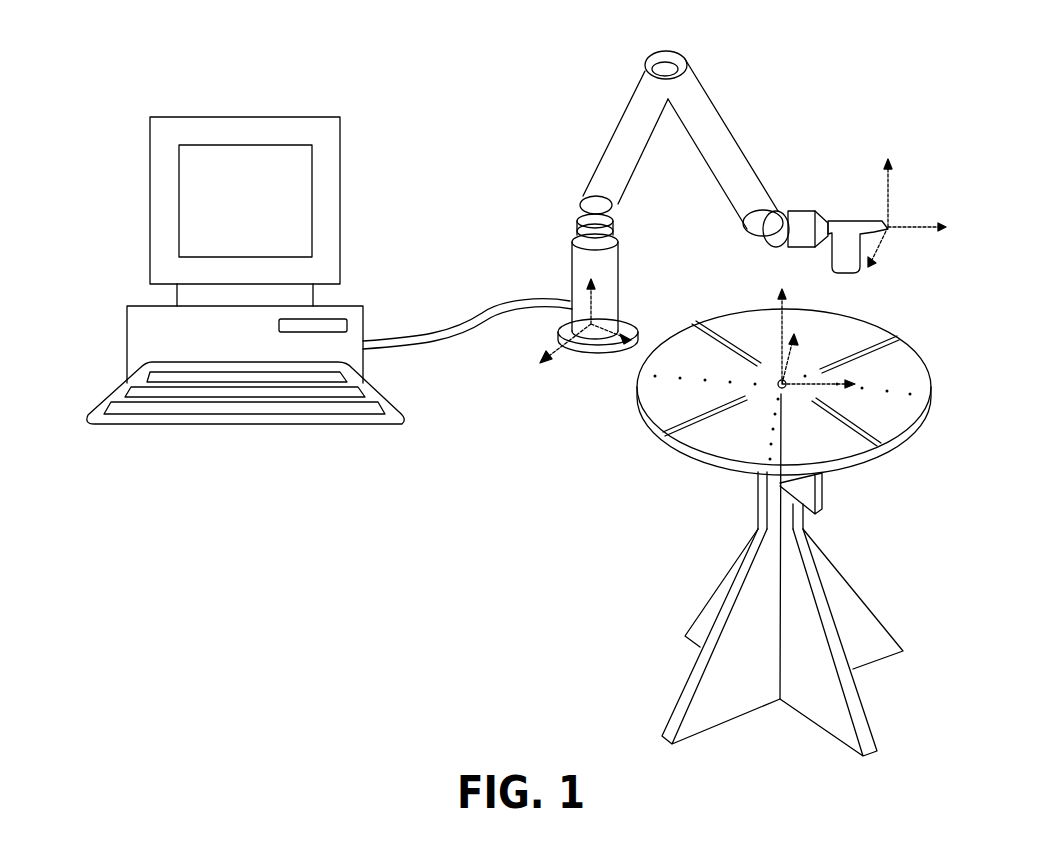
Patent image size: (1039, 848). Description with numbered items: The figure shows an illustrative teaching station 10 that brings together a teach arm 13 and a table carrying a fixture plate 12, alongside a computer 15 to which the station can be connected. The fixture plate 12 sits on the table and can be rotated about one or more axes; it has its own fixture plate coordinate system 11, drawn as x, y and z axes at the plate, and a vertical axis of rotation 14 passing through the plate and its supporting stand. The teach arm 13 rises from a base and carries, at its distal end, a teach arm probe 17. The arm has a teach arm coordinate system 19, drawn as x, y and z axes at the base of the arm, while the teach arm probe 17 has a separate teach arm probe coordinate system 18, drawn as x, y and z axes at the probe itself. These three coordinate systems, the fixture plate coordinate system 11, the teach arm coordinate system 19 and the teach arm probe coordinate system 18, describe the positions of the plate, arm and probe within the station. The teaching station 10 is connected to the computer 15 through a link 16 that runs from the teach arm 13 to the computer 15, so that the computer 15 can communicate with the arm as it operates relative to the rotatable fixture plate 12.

The teaching station 10 is at (427, 635).
The fixture plate coordinate system 11 is at (823, 388).
The fixture plate 12 is at (900, 360).
The teach arm 13 is at (718, 142).
The vertical axis of rotation 14 is at (782, 443).
The computer 15 is at (307, 130).
The link 16 is at (465, 320).
The teach arm probe 17 is at (878, 216).
The teach arm probe coordinate system 18 is at (918, 232).
The teach arm coordinate system 19 is at (547, 350).